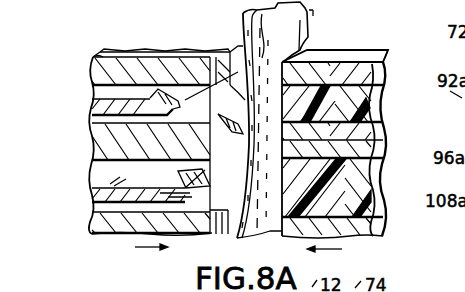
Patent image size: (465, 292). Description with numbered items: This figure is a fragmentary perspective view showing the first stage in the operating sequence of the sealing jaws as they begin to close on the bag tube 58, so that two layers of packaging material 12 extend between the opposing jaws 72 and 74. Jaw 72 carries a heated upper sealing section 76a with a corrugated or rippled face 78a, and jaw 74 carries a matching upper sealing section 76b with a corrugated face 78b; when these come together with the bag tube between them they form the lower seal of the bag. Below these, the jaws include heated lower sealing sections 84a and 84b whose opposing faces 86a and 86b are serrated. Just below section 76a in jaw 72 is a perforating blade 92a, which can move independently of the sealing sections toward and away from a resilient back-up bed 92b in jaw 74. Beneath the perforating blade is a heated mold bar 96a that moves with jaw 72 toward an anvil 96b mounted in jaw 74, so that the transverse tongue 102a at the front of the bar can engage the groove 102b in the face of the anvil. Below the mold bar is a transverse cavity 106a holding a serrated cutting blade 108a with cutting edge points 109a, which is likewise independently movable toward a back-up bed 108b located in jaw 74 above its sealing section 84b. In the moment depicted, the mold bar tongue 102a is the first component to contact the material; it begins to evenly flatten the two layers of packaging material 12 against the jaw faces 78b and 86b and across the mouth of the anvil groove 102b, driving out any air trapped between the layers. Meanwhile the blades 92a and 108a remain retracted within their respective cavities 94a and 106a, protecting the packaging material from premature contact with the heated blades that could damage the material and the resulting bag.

The packaging material 12 is at (323, 14).
The bag tube 58 is at (245, 42).
The jaw 72 is at (94, 49).
The jaw 74 is at (392, 35).
The upper sealing section 76a is at (152, 56).
The upper sealing section 76b is at (350, 48).
The corrugated face 78a is at (233, 55).
The corrugated face 78b is at (292, 50).
The lower sealing section 84a is at (91, 235).
The lower sealing section 84b is at (380, 225).
The serrated face 86a is at (228, 236).
The serrated face 86b is at (300, 235).
The perforating blade 92a is at (91, 101).
The blade back-up bed 92b is at (417, 94).
The cavity 94a is at (91, 86).
The mold bar 96a is at (102, 143).
The anvil 96b is at (386, 127).
The tongue 102a is at (234, 122).
The groove 102b is at (443, 145).
The cavity 106a is at (91, 215).
The serrated cutting blade 108a is at (91, 195).
The back-up bed 108b is at (426, 188).
The cutting edge points 109a is at (192, 171).